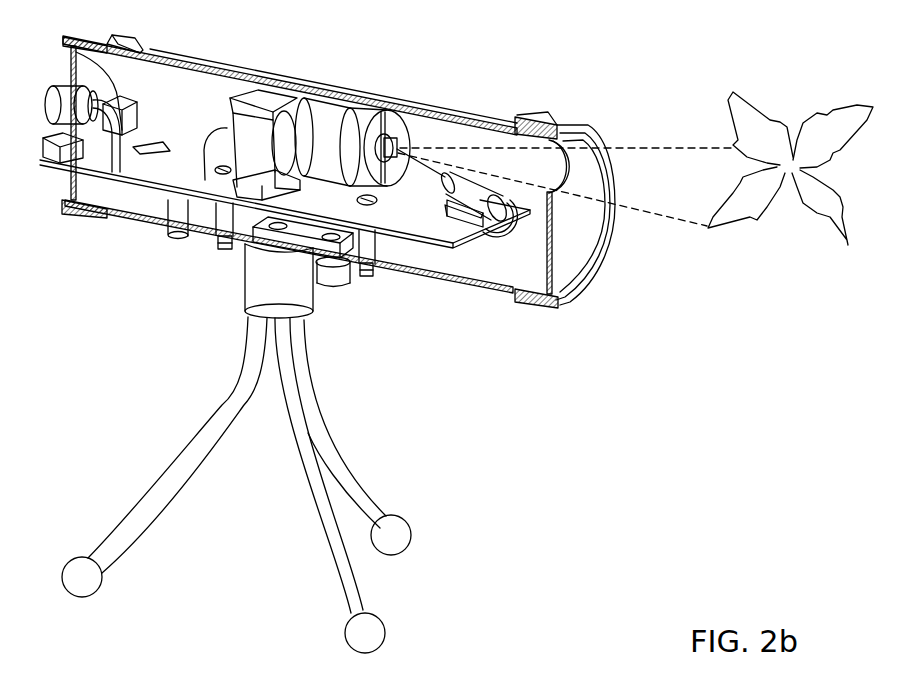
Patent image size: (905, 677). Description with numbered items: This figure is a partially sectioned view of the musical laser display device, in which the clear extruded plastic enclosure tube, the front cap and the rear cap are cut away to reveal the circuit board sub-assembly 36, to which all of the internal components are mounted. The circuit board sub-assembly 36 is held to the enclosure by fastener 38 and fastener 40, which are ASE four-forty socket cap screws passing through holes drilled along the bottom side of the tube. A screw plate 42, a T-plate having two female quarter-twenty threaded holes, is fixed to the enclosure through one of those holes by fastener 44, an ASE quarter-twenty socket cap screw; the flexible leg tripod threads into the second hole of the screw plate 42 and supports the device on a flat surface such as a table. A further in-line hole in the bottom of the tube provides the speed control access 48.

The circuit board sub-assembly 36 is at (150, 164).
The fastener 38 is at (220, 243).
The fastener 40 is at (372, 275).
The screw plate 42 is at (302, 242).
The fastener 44 is at (342, 272).
The speed control access 48 is at (173, 227).